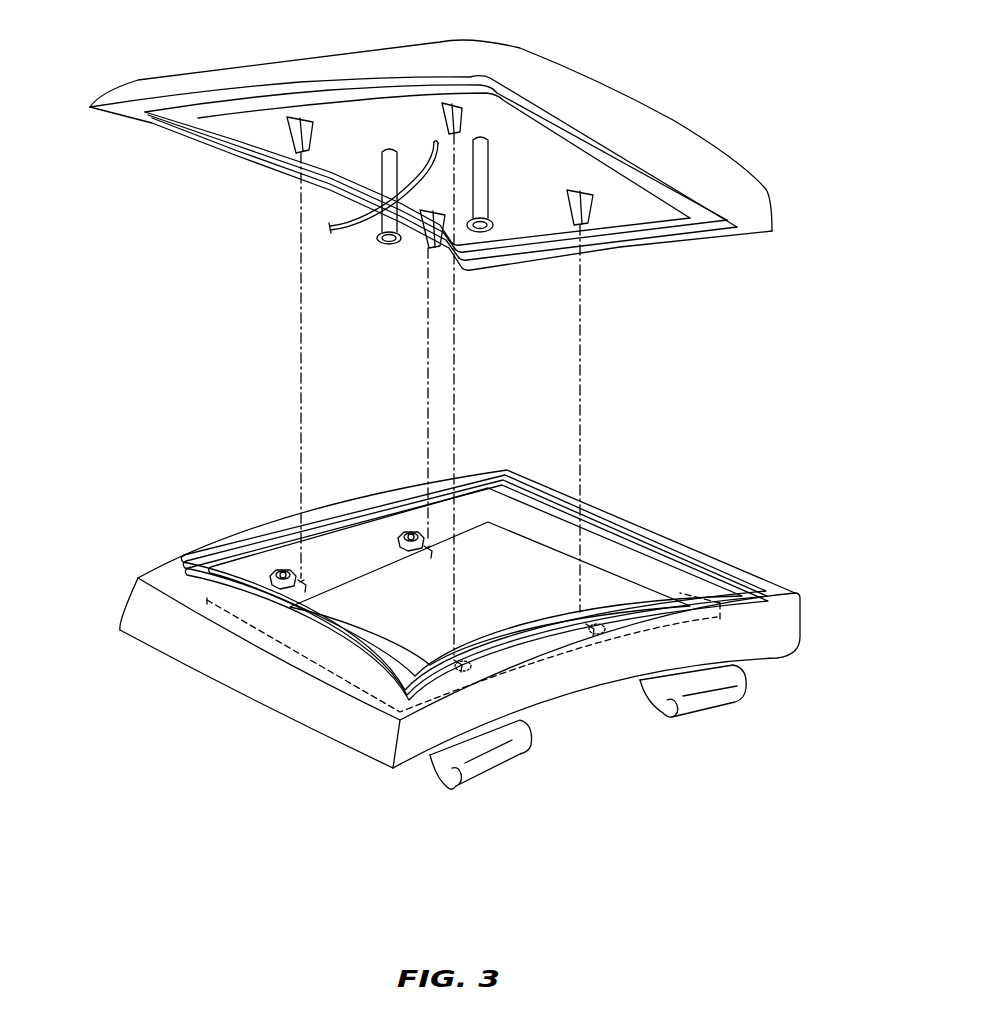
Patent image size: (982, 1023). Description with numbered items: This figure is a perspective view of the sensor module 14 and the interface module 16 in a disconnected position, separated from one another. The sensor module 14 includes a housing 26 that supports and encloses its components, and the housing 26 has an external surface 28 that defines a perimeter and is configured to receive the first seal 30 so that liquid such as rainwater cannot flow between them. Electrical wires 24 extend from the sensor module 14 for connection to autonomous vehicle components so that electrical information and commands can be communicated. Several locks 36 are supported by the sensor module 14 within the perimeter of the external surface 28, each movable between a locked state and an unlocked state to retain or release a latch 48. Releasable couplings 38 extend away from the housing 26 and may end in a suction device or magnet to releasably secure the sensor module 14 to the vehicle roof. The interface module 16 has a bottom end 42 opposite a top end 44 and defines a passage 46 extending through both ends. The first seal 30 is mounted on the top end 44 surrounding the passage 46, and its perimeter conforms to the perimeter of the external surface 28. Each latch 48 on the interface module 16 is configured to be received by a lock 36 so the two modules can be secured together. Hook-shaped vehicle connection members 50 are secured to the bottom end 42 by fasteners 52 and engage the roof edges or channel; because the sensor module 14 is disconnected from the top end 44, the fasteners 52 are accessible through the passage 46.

The sensor module 14 is at (606, 103).
The interface module 16 is at (170, 633).
The electrical wires 24 is at (333, 240).
The housing 26 is at (750, 178).
The external surface 28 is at (715, 225).
The first seal 30 is at (180, 560).
The lock 36 is at (462, 108).
The releasable coupling 38 is at (382, 175).
The bottom end 42 is at (205, 683).
The top end 44 is at (150, 580).
The passage 46 is at (498, 613).
The latch 48 is at (318, 590).
The vehicle connection member 50 is at (500, 772).
The fastener 52 is at (275, 568).